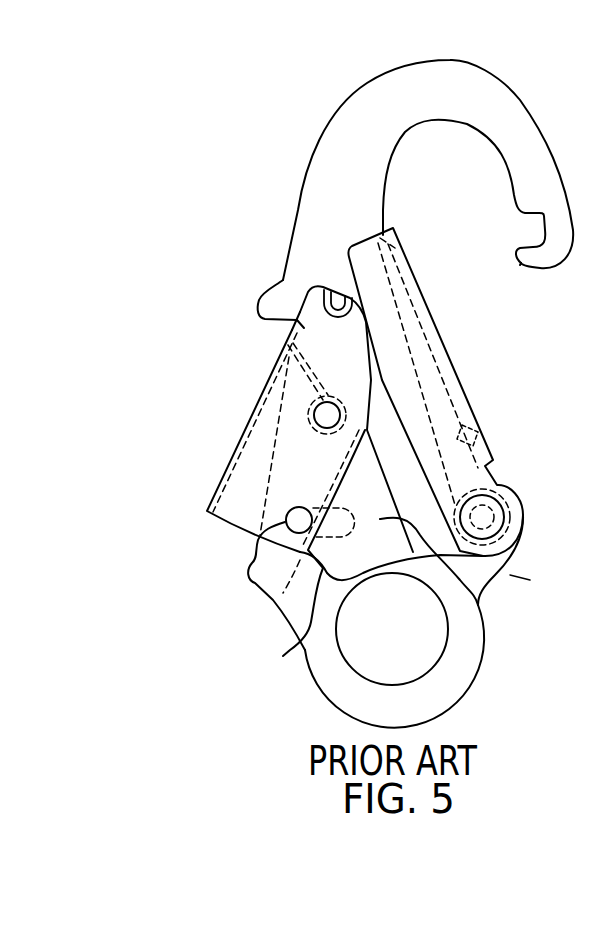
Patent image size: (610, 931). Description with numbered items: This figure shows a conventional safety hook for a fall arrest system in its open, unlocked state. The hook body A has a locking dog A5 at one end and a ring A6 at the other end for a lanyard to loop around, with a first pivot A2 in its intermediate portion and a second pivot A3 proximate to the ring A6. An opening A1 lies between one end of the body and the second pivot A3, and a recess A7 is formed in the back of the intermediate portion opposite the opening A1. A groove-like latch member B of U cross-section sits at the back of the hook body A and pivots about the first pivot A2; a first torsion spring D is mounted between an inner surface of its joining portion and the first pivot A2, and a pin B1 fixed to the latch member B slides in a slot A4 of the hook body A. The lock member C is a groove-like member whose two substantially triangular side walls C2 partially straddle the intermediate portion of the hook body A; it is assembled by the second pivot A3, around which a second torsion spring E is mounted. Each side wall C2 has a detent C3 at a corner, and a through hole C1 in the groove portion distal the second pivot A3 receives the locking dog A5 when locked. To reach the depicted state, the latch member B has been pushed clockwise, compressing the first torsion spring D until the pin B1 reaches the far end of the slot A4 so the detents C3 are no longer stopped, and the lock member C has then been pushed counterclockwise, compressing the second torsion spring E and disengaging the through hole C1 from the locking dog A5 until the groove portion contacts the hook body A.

The hook body A is at (327, 143).
The opening A1 is at (517, 358).
The first pivot A2 is at (300, 427).
The second pivot A3 is at (506, 519).
The slot A4 is at (278, 603).
The locking dog A5 is at (520, 265).
The ring A6 is at (457, 647).
The recess A7 is at (267, 340).
The latch member B is at (207, 497).
The pin B1 is at (255, 580).
The lock member C is at (440, 327).
The through hole C1 is at (412, 263).
The side walls C2 is at (480, 595).
The detents C3 is at (287, 653).
The first torsion spring D is at (287, 380).
The second torsion spring E is at (483, 433).